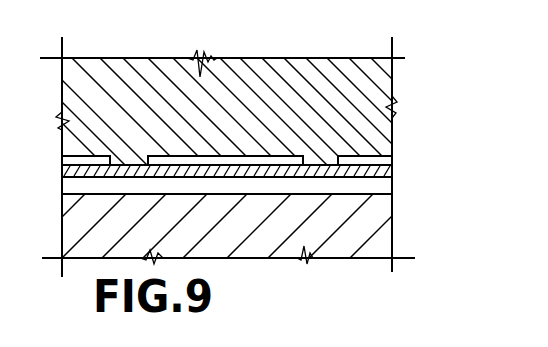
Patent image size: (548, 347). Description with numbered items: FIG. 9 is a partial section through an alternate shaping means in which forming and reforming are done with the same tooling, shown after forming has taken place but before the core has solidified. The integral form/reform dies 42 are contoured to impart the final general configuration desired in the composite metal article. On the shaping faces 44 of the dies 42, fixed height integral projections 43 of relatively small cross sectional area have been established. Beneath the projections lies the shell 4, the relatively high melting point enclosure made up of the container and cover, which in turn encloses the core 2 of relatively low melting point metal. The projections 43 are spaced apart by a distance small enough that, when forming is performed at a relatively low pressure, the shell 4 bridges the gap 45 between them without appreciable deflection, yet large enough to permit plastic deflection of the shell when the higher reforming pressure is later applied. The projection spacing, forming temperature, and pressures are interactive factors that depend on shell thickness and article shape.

The integral form/reform dies 42 is at (385, 78).
The integral projections 43 is at (328, 156).
The shaping faces 44 is at (392, 139).
The gap 45 is at (250, 158).
The shell 4 is at (392, 169).
The core 2 is at (370, 248).